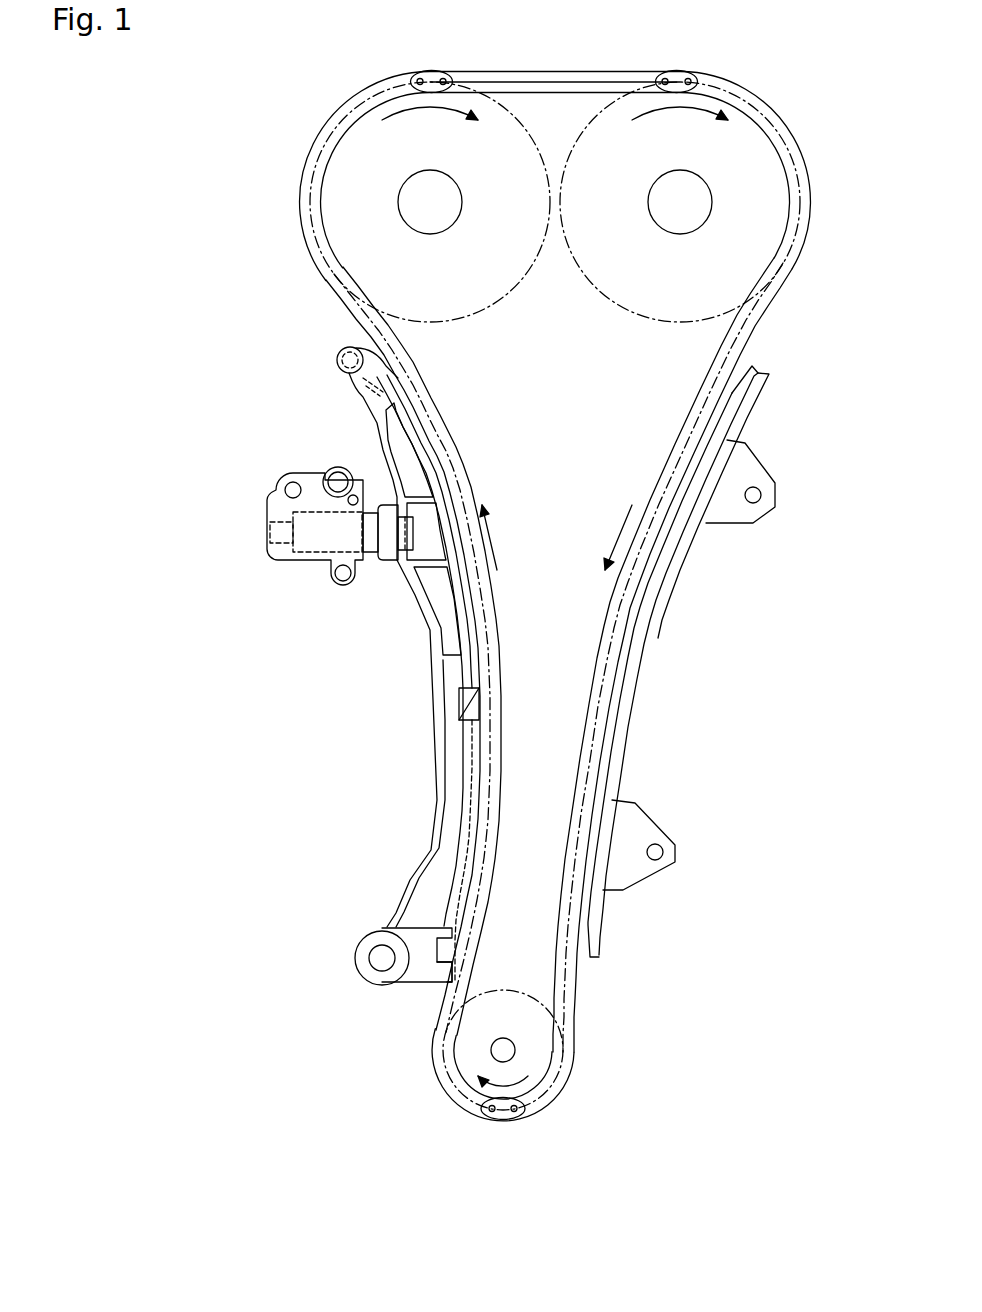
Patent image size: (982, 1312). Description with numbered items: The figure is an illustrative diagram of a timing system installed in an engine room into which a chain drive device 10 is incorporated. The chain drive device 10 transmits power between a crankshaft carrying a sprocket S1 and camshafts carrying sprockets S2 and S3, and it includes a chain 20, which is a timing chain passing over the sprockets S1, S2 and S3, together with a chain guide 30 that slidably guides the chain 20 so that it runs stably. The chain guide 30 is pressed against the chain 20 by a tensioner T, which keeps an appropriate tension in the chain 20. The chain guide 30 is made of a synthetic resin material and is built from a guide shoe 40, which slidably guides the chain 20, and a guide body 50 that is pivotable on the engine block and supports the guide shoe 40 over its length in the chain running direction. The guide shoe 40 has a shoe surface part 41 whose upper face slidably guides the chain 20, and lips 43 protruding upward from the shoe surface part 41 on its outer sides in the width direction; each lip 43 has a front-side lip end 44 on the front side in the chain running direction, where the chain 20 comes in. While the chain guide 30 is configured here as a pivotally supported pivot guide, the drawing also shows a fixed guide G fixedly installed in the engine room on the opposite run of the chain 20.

The chain drive device 10 is at (385, 715).
The chain 20 is at (410, 678).
The chain guide 30 is at (452, 753).
The guide shoe 40 is at (445, 927).
The shoe surface part 41 is at (462, 786).
The lip 43 is at (468, 867).
The front-side lip end 44 is at (443, 977).
The guide body 50 is at (425, 902).
The sprocket S1 is at (535, 1048).
The sprocket S2 is at (352, 195).
The sprocket S3 is at (745, 187).
The tensioner T is at (278, 503).
The fixed guide G is at (628, 712).